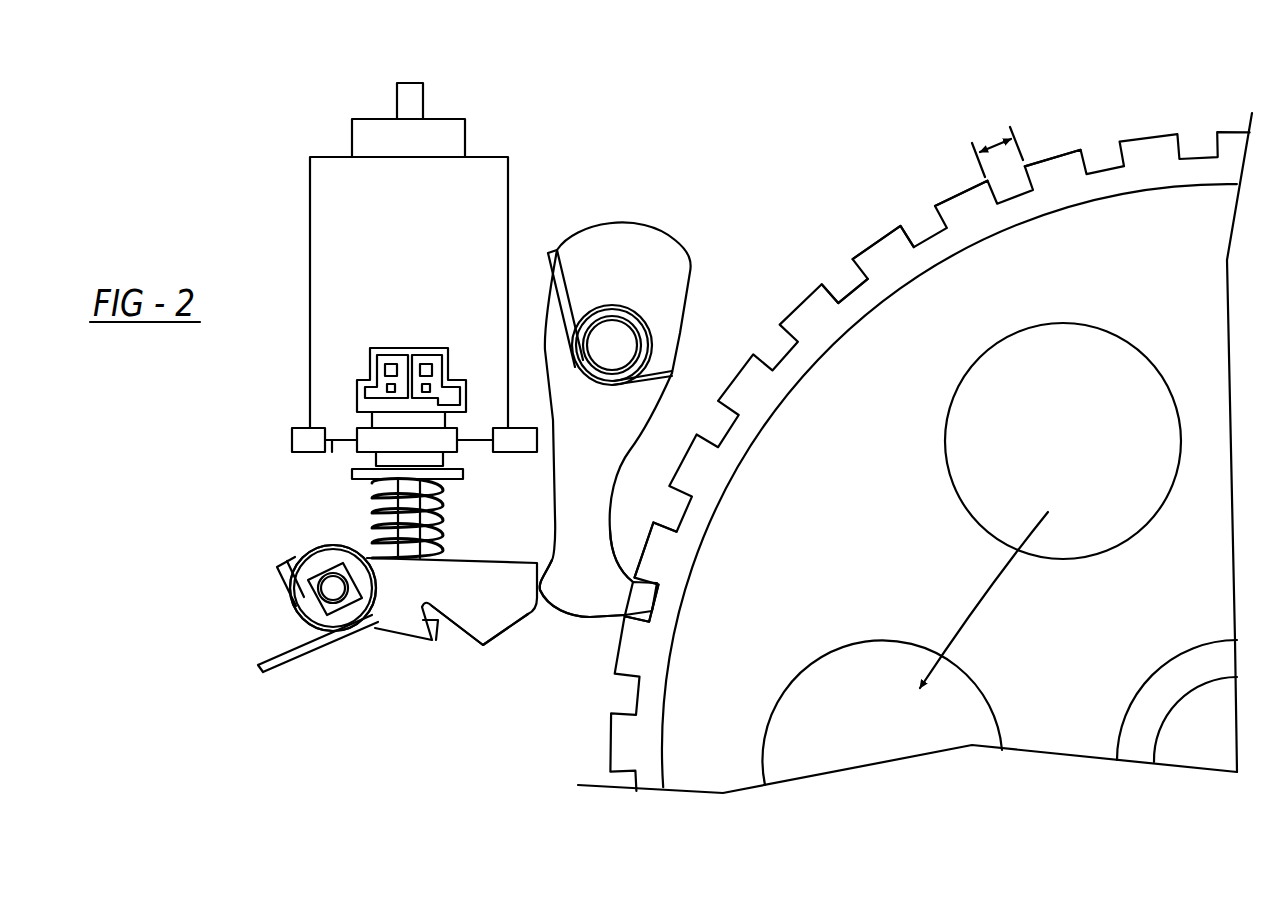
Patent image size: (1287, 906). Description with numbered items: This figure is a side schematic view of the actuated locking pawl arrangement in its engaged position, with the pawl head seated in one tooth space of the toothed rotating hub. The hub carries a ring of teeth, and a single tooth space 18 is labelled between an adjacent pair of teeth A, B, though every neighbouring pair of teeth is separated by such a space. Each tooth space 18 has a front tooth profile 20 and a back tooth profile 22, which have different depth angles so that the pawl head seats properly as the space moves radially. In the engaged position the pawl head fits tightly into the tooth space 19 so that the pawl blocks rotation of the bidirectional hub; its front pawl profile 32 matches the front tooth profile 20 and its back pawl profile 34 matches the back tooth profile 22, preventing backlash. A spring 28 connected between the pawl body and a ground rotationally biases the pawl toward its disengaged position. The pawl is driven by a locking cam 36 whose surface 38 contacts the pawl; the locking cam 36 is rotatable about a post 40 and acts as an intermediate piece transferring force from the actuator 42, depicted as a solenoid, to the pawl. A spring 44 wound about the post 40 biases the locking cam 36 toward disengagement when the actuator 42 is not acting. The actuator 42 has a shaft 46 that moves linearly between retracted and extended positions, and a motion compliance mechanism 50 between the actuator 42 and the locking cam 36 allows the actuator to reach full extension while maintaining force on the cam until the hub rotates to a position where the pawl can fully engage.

The tooth space 18 is at (993, 138).
The tooth space 19 is at (653, 600).
The front tooth profile 20 is at (853, 262).
The back tooth profile 22 is at (835, 283).
The spring 28 is at (560, 272).
The front pawl profile 32 is at (633, 585).
The back pawl profile 34 is at (628, 604).
The locking cam 36 is at (490, 618).
The surface 38 is at (501, 657).
The post 40 is at (320, 592).
The actuator 42 is at (310, 262).
The spring 44 is at (440, 503).
The shaft 46 is at (372, 525).
The motion compliance mechanism 50 is at (244, 570).
The tooth A is at (1058, 157).
The tooth B is at (965, 200).